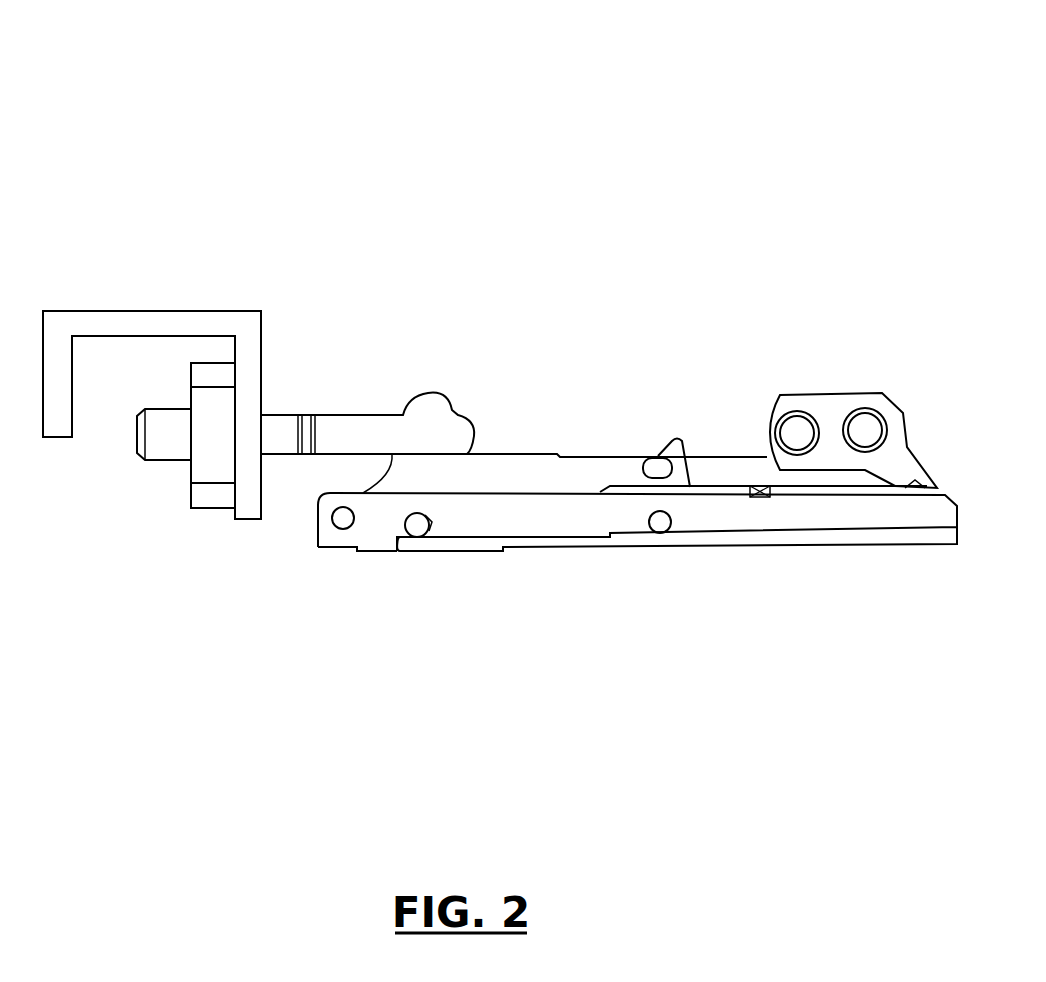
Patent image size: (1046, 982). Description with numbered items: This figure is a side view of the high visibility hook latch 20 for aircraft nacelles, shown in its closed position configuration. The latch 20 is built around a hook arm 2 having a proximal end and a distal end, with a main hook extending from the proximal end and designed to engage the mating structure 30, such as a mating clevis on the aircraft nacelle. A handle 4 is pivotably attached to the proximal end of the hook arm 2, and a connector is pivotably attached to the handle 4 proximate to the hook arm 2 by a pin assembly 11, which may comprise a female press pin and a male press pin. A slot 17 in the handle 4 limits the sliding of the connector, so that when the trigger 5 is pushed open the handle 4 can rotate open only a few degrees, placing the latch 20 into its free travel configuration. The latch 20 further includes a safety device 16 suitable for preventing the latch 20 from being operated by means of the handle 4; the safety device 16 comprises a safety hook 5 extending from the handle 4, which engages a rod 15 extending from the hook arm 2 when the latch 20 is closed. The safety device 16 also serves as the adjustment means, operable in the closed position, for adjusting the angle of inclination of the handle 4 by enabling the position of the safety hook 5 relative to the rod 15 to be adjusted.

The high visibility hook latch 20 is at (394, 130).
The mating structure 30 is at (122, 286).
The hook arm 2 is at (520, 454).
The handle 4 is at (318, 548).
The trigger 5 is at (684, 446).
The pin assembly 11 is at (417, 530).
The rod 15 is at (643, 466).
The safety device 16 is at (653, 420).
The slot 17 is at (430, 520).